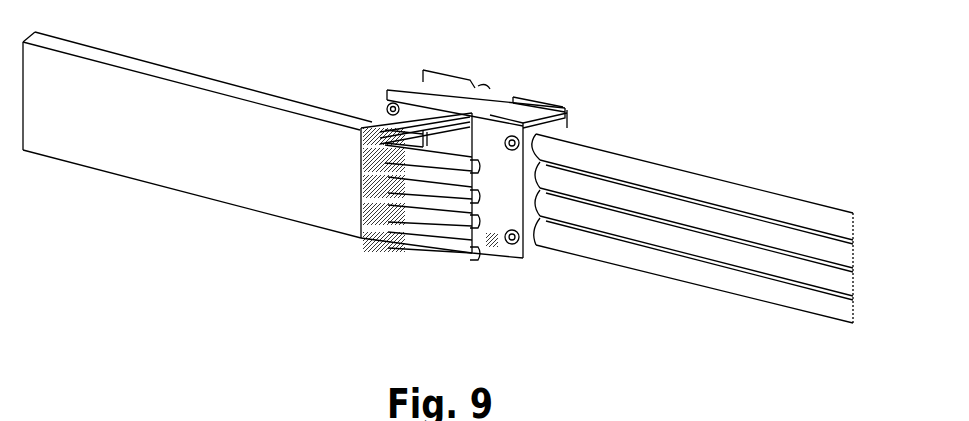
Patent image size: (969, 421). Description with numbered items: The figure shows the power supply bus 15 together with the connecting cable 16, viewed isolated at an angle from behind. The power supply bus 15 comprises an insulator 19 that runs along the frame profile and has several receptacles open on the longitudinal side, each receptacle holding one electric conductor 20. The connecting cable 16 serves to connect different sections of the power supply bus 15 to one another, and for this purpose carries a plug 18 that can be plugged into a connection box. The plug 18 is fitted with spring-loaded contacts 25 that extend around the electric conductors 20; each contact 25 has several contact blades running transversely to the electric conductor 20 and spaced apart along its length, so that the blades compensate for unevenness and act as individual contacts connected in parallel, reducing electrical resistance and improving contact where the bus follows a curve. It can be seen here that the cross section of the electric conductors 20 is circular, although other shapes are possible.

The power supply bus 15 is at (276, 70).
The connecting cable 16 is at (667, 177).
The plug 18 is at (532, 118).
The insulator 19 is at (183, 178).
The electric conductor 20 is at (480, 262).
The contact 25 is at (370, 254).